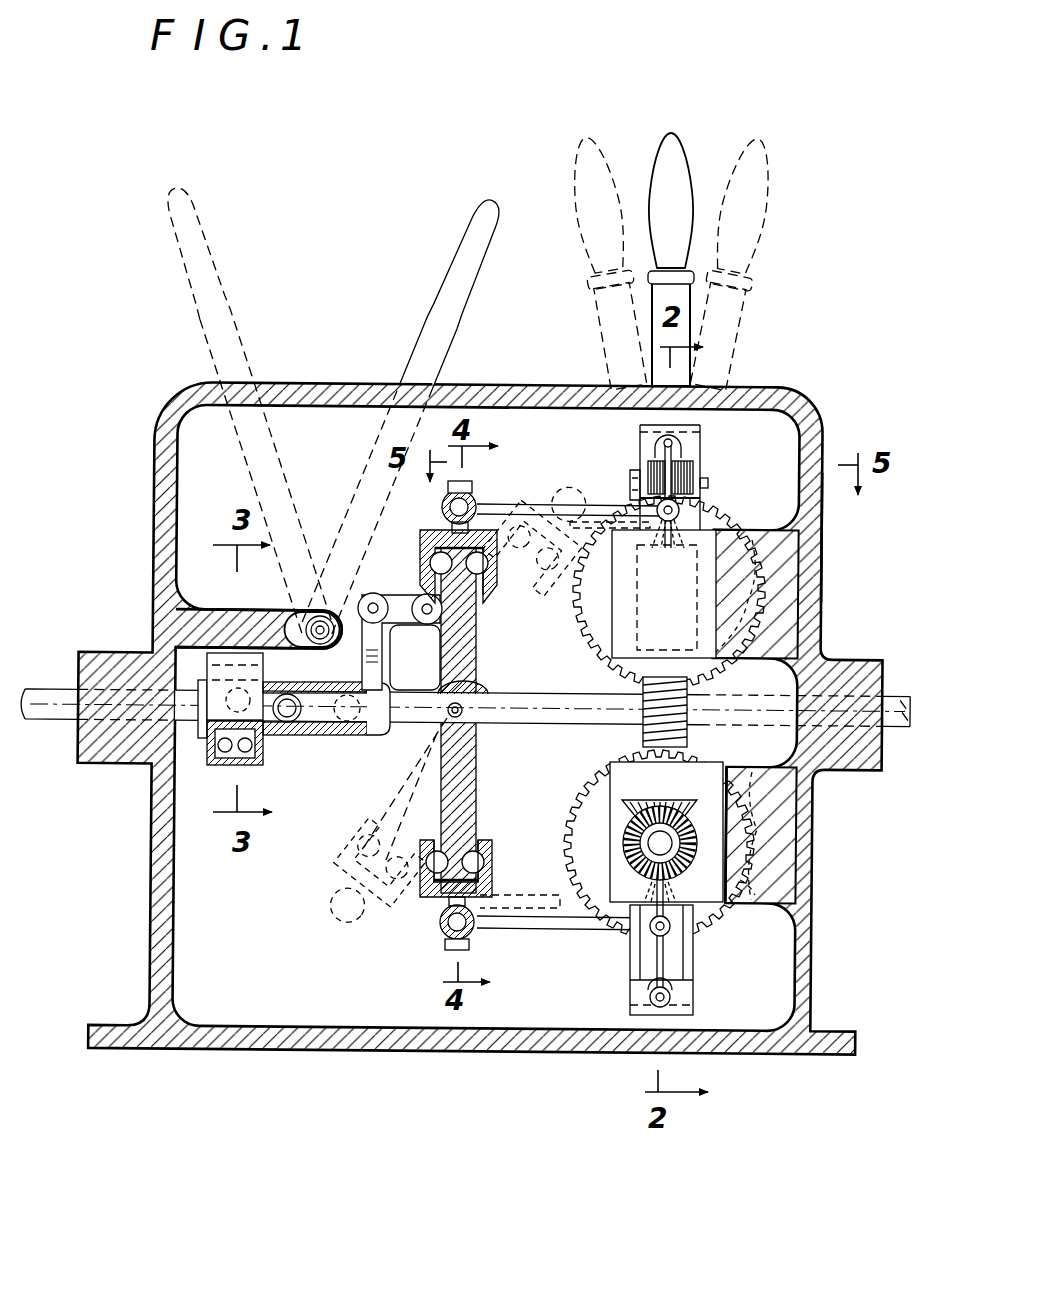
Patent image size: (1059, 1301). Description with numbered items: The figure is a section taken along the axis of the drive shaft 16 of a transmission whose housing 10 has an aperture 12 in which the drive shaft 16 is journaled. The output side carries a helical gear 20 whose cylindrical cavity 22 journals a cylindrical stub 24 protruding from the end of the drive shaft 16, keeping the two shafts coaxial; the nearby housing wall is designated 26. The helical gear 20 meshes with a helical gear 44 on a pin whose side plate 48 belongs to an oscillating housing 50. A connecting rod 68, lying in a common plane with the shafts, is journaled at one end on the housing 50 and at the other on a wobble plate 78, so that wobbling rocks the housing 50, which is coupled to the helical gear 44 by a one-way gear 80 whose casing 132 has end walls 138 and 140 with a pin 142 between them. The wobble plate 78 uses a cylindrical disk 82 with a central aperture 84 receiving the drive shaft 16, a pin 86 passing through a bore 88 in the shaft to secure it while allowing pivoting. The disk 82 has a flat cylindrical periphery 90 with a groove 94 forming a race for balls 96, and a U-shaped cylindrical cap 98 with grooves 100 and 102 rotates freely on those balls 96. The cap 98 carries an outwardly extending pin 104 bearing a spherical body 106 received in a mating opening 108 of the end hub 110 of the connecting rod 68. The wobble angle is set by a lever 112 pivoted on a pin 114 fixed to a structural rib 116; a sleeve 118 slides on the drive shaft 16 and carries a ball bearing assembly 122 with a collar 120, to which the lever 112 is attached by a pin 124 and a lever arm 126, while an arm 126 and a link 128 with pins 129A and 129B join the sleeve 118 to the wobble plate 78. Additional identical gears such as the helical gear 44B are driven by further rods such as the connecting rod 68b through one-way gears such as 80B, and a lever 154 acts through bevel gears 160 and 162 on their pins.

The housing 10 is at (157, 500).
The aperture 12 is at (112, 765).
The drive shaft 16 is at (55, 691).
The helical gear 20 is at (690, 689).
The cylindrical cavity 22 is at (666, 833).
The cylindrical stub 24 is at (643, 686).
The housing side wall 26 is at (821, 548).
The helical gear 44 is at (757, 652).
The helical gear 44B is at (494, 862).
The side plate 48 is at (757, 578).
The housing 50 is at (634, 425).
The connecting rod 68 is at (585, 512).
The connecting rod 68b is at (552, 930).
The wobble plate 78 is at (436, 670).
The one-way gear 80 is at (664, 594).
The one-way gear 80B is at (630, 975).
The cylindrical disk 82 is at (478, 755).
The central aperture 84 is at (484, 690).
The pin 86 is at (444, 735).
The bore 88 is at (449, 713).
The cylindrical periphery 90 is at (483, 931).
The groove 94 is at (480, 836).
The balls 96 is at (420, 900).
The U-shaped cylindrical cap 98 is at (441, 928).
The groove 100 is at (490, 848).
The groove 102 is at (494, 872).
The outwardly extending pin 104 is at (444, 499).
The spherical body 106 is at (443, 519).
The mating opening 108 is at (471, 498).
The end hub 110 is at (432, 540).
The lever 112 is at (208, 262).
The pin 114 is at (302, 618).
The structural rib 116 is at (207, 611).
The sleeve 118 is at (340, 736).
The collar 120 is at (224, 766).
The ball bearing assembly 122 is at (254, 766).
The pin 124 is at (222, 713).
The lever arm 126 is at (306, 630).
The link 128 is at (401, 642).
The pin 129A is at (364, 598).
The pivot pin 129B is at (443, 612).
The casing 132 is at (706, 443).
The end wall 138 is at (642, 470).
The end wall 140 is at (696, 470).
The pin 142 is at (710, 483).
The lever 154 is at (602, 146).
The bevel gear 160 is at (696, 812).
The bevel gear 162 is at (696, 858).